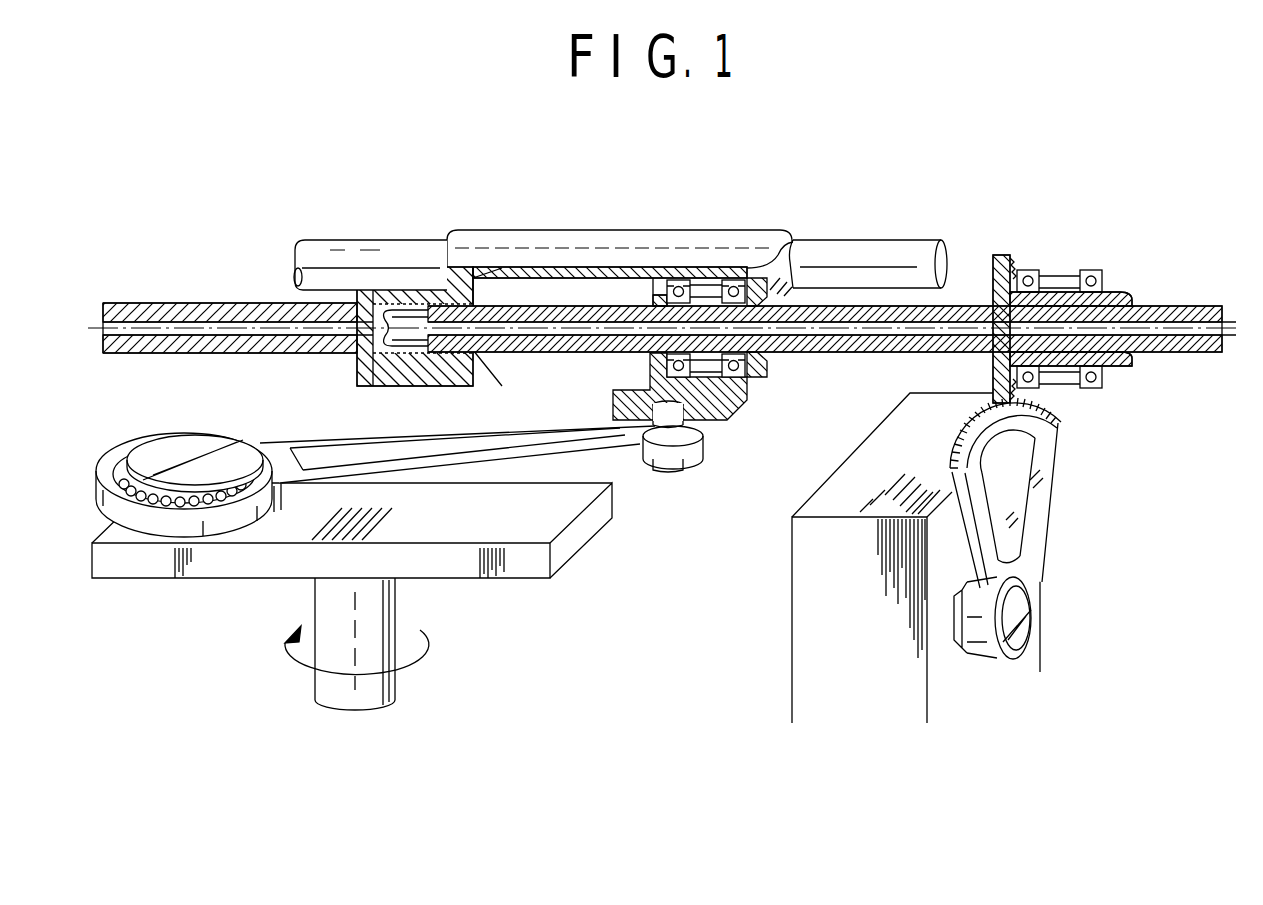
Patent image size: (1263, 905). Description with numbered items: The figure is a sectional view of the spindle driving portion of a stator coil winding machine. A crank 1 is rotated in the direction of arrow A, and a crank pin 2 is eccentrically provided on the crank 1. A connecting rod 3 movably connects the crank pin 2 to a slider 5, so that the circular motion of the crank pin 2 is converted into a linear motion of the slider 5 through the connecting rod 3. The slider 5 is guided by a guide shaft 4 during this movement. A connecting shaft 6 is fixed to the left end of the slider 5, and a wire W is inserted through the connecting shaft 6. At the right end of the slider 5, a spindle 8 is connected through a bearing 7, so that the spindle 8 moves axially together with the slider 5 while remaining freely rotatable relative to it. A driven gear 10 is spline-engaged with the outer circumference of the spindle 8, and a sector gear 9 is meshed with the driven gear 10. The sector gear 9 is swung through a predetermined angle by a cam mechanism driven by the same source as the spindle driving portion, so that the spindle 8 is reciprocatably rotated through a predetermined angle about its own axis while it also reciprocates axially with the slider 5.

The crank 1 is at (578, 545).
The crank pin 2 is at (142, 453).
The connecting rod 3 is at (620, 455).
The guide shaft 4 is at (855, 247).
The slider 5 is at (552, 267).
The connecting shaft 6 is at (232, 300).
The bearing 7 is at (740, 402).
The spindle 8 is at (1186, 302).
The sector gear 9 is at (1047, 462).
The driven gear 10 is at (998, 253).
The wire W is at (163, 299).
The direction of rotation (arrow A) A is at (346, 644).